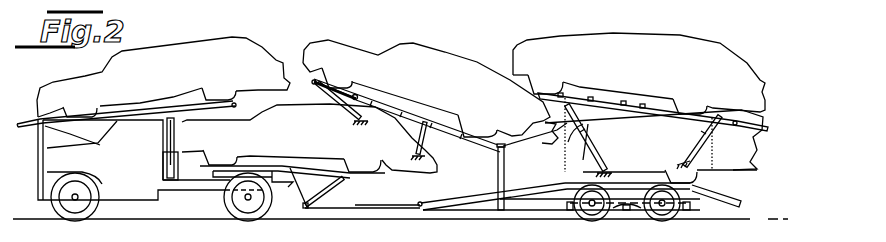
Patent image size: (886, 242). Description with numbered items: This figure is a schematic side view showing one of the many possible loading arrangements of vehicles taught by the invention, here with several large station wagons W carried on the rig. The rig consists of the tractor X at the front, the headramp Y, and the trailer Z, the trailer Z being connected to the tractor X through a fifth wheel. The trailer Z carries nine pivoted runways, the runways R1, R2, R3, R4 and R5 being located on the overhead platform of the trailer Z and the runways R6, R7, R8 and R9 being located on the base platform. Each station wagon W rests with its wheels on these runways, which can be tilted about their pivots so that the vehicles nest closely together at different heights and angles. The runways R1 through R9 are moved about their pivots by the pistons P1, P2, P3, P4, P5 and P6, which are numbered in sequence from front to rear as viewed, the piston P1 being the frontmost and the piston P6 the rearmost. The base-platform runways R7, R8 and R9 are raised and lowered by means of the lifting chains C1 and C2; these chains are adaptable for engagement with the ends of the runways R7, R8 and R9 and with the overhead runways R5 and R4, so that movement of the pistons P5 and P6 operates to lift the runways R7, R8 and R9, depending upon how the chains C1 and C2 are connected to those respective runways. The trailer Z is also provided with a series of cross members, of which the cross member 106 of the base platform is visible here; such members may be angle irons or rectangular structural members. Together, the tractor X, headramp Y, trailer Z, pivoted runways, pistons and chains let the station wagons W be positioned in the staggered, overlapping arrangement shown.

The large station wagon W is at (187, 80).
The tractor X is at (138, 161).
The headramp Y is at (33, 117).
The trailer Z is at (540, 213).
The pivoted runway R1 is at (353, 77).
The pivoted runway R2 is at (398, 108).
The pivoted runway R3 is at (465, 123).
The pivoted runway R4 is at (600, 100).
The pivoted runway R5 is at (690, 106).
The pivoted runway R6 is at (333, 167).
The pivoted runway R7 is at (486, 200).
The pivoted runway R8 is at (623, 188).
The pivoted runway R9 is at (717, 198).
The piston P1 is at (346, 112).
The piston P2 is at (336, 192).
The piston P3 is at (428, 134).
The piston P4 is at (498, 181).
The piston P5 is at (598, 157).
The piston P6 is at (693, 144).
The lifting chain C1 is at (551, 127).
The lifting chain C2 is at (722, 182).
The cross member 106 is at (550, 89).